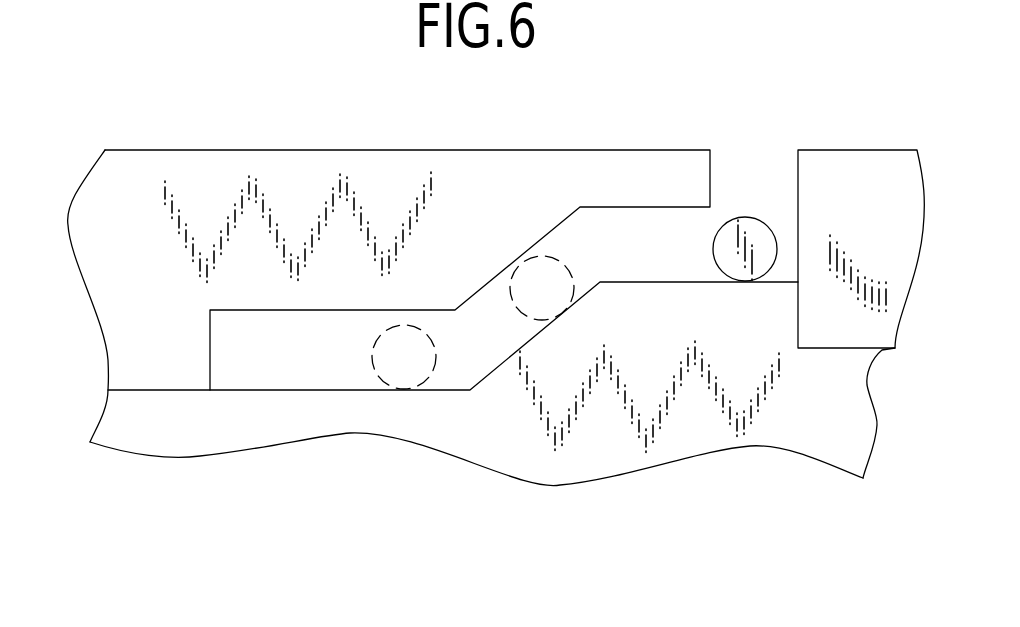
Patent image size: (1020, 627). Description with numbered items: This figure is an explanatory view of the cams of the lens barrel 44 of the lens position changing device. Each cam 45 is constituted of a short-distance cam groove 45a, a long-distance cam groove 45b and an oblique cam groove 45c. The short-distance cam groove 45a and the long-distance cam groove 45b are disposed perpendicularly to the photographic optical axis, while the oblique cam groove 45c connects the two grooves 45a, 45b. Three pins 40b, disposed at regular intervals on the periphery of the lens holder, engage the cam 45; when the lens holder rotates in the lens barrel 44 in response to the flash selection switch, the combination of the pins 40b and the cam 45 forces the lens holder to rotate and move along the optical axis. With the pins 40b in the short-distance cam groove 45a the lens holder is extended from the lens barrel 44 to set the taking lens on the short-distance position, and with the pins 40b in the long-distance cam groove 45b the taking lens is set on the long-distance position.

The lens barrel 44 is at (288, 170).
The cam 45 is at (507, 373).
The short-distance cam groove 45a is at (633, 267).
The long-distance cam groove 45b is at (347, 375).
The oblique cam groove 45c is at (506, 333).
The pin 40b is at (750, 238).